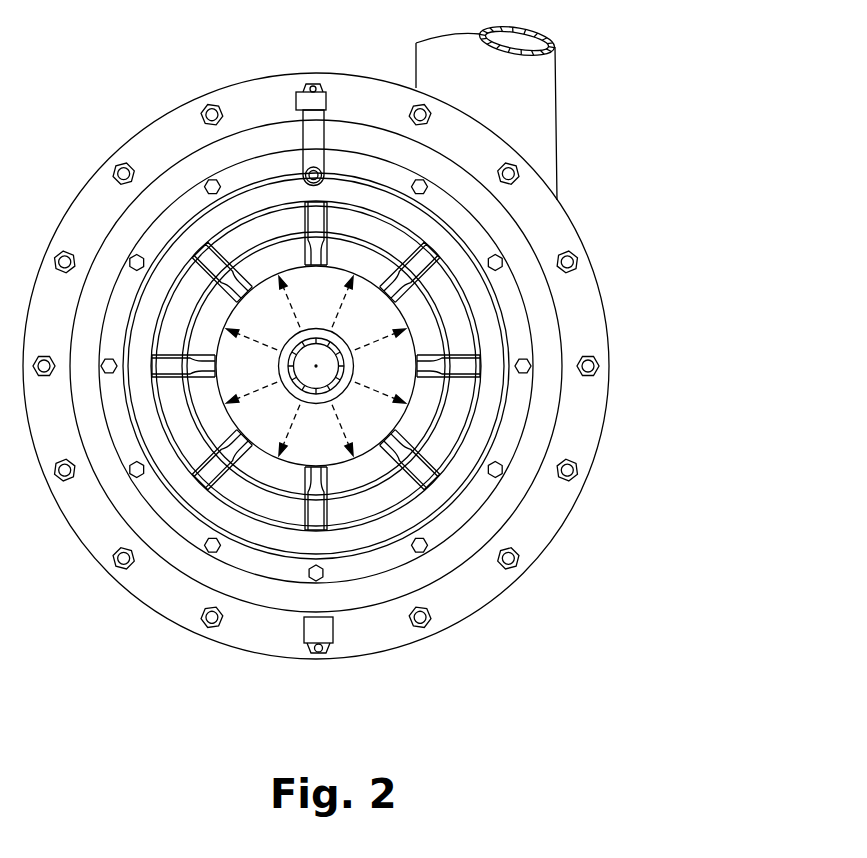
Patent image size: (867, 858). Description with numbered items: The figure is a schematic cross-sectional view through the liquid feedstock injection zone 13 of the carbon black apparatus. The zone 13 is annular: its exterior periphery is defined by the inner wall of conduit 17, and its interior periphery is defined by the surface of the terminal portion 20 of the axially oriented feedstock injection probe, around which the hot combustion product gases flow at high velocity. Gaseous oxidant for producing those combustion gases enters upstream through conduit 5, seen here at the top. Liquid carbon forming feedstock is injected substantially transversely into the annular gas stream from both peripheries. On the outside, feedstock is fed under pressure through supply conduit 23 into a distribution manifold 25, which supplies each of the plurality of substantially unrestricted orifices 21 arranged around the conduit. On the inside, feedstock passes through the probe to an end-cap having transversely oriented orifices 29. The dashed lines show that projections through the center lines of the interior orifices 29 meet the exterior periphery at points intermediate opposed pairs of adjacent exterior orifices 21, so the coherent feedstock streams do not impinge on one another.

The conduit 5 is at (480, 34).
The feedstock injection zone 13 is at (316, 366).
The conduit 17 is at (417, 382).
The terminal portion 20 is at (281, 372).
The orifices 21 is at (386, 293).
The supply conduit 23 is at (314, 107).
The distribution manifold 25 is at (348, 149).
The orifices 29 is at (305, 398).